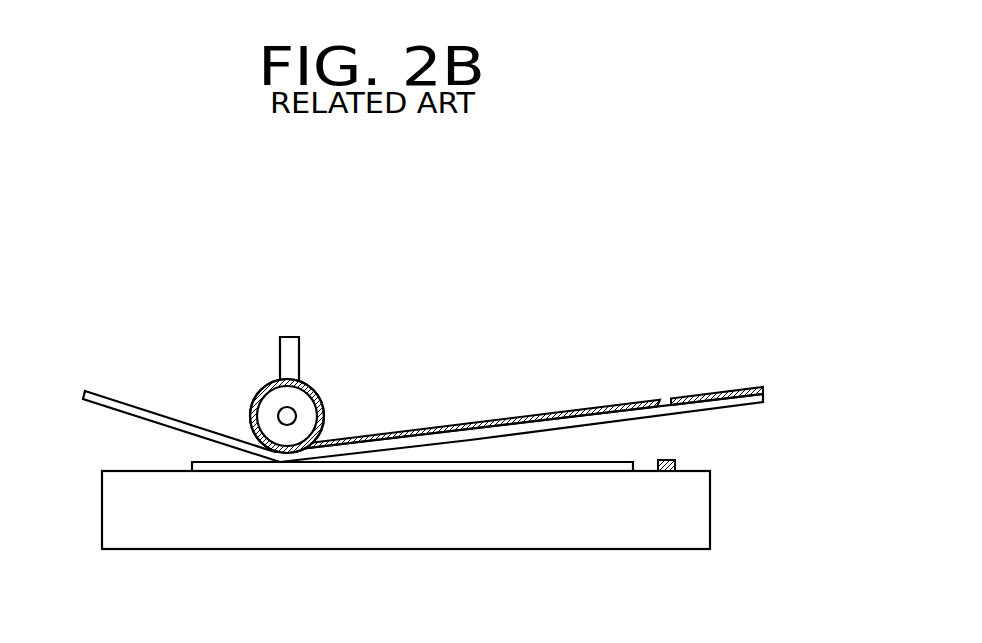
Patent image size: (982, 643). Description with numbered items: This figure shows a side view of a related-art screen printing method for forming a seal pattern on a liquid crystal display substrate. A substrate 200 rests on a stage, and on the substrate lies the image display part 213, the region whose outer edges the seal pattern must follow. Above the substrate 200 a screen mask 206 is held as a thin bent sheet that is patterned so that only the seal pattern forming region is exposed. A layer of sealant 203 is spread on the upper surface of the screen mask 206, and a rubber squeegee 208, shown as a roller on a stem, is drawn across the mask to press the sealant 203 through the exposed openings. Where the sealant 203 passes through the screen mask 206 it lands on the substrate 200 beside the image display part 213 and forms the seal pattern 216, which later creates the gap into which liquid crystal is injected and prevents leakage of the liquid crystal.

The substrate 200 is at (688, 520).
The image display part 213 is at (628, 467).
The seal pattern 216 is at (676, 465).
The screen mask 206 is at (763, 395).
The sealant 203 is at (723, 390).
The rubber squeegee 208 is at (303, 403).